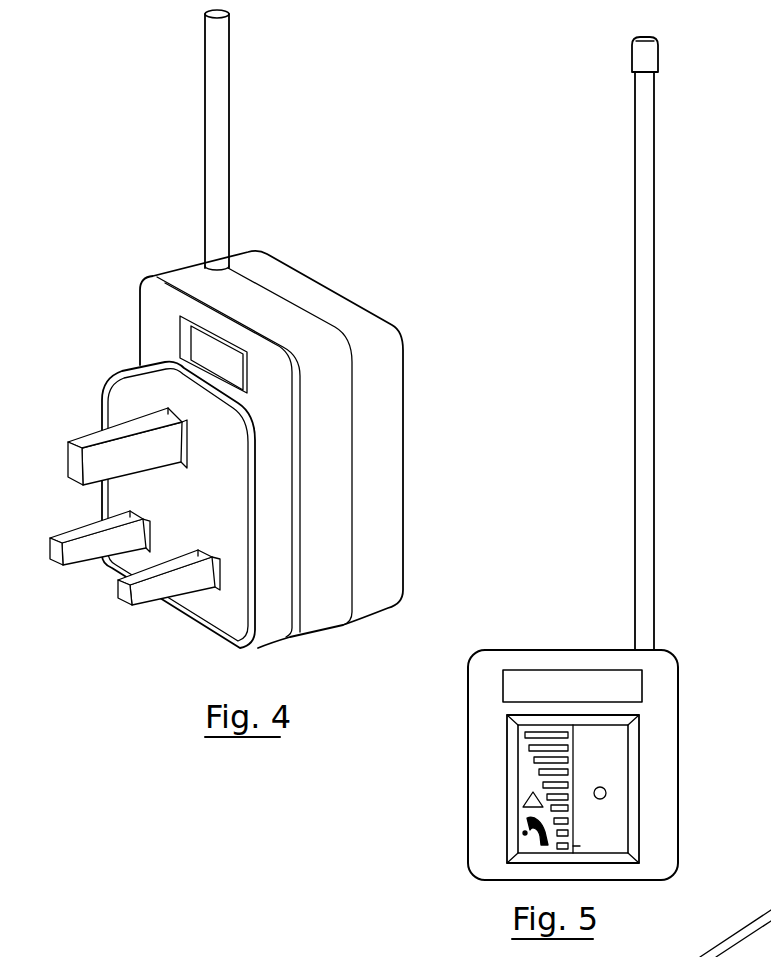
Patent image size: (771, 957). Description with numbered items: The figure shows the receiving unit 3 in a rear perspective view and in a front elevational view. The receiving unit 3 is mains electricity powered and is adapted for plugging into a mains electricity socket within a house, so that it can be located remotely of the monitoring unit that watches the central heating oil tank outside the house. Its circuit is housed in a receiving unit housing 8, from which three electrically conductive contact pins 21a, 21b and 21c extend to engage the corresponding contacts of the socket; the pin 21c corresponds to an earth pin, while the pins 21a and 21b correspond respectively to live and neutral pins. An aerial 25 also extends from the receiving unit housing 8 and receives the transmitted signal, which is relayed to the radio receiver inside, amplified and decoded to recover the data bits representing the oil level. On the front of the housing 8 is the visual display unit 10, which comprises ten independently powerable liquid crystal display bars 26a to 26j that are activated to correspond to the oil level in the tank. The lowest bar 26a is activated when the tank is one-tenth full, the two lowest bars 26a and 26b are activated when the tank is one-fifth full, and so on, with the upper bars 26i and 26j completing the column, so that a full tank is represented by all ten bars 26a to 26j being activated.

In FIG. 4, the receiving unit 3 is at (237, 336).
In FIG. 5, the receiving unit 3 is at (576, 479).
In FIG. 4, the receiving unit housing 8 is at (303, 284).
In FIG. 5, the receiving unit housing 8 is at (487, 853).
In FIG. 4, the aerial 25 is at (220, 146).
In FIG. 5, the aerial 25 is at (645, 320).
In FIG. 4, the contact pin 21a is at (58, 552).
In FIG. 4, the contact pin 21b is at (125, 592).
In FIG. 4, the contact pin 21c is at (68, 458).
In FIG. 5, the visual display unit 10 is at (576, 818).
In FIG. 5, the liquid crystal display bar 26a is at (562, 852).
In FIG. 5, the liquid crystal display bar 26b is at (567, 830).
In FIG. 5, the liquid crystal display bar 26i is at (567, 745).
In FIG. 5, the liquid crystal display bar 26j is at (527, 737).